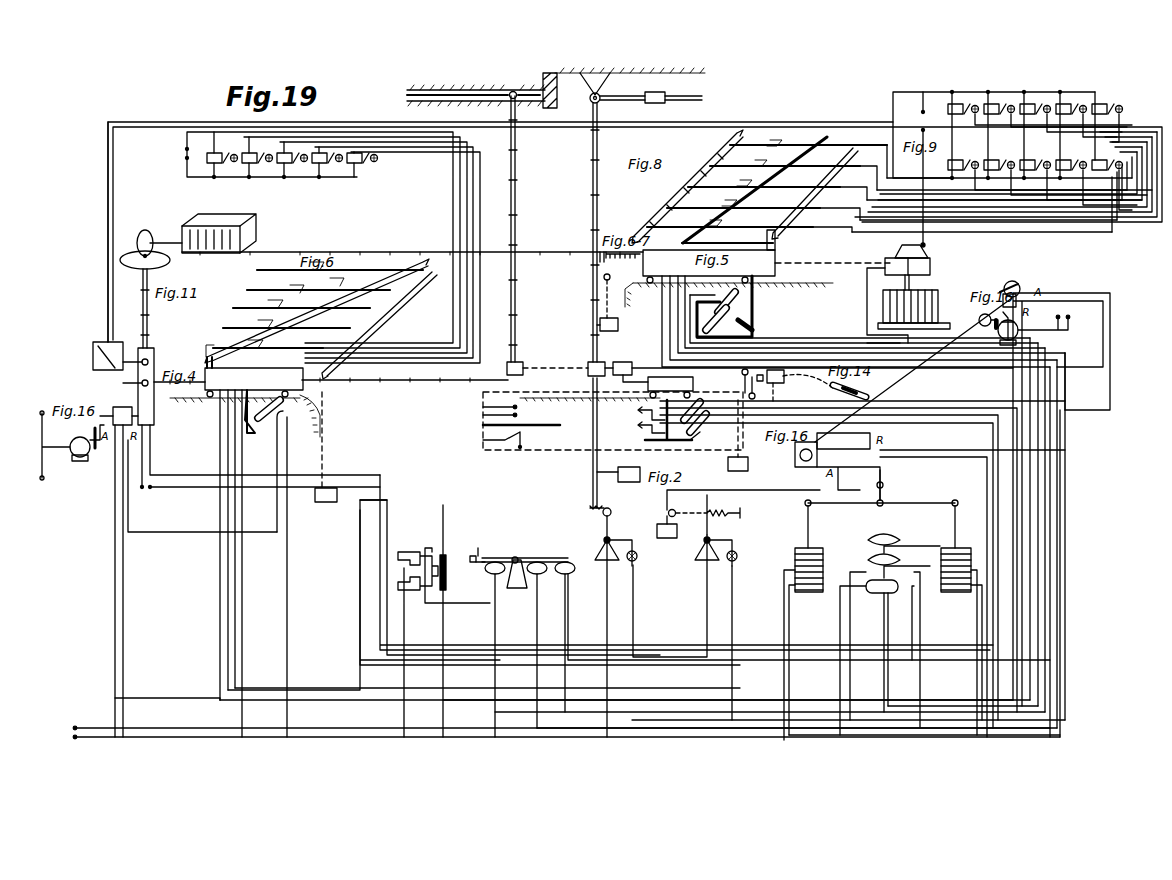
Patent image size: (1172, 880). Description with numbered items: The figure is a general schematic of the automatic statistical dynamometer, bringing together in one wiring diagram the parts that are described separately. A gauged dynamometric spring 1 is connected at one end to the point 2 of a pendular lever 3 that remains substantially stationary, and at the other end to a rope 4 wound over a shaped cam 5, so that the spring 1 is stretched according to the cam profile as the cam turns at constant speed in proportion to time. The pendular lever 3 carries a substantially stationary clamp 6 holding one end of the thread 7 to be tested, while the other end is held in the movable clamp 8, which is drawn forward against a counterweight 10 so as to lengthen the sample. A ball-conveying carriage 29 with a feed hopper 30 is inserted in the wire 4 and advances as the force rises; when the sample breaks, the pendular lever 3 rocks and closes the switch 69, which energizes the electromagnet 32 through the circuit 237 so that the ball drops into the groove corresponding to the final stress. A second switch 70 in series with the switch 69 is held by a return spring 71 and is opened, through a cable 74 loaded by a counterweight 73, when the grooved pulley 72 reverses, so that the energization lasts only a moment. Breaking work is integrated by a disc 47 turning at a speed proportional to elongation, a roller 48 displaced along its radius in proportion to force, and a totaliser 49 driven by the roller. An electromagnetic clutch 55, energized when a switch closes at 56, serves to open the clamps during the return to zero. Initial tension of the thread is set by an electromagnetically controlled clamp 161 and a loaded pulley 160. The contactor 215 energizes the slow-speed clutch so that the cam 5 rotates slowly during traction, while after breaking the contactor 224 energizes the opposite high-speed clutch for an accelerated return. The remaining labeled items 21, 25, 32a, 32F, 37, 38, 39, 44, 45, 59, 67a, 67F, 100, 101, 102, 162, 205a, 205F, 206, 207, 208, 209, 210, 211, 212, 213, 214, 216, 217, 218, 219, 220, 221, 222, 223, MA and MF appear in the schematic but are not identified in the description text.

The dynamometric spring 1 is at (608, 267).
The point of the pendular lever 2 is at (600, 302).
The pendular lever 3 is at (590, 300).
The rope 4 is at (623, 263).
The cam 5 is at (1020, 282).
The clamp 6 is at (596, 361).
The thread to be tested 7 is at (551, 355).
The movable clamp 8 is at (547, 360).
The counterweight 10 is at (326, 456).
The link rod 21 is at (651, 106).
The relay 25 is at (251, 418).
The movable carriage 29 is at (914, 302).
The feed hopper 30 is at (928, 256).
The electromagnet 32 is at (885, 255).
The contact block 32a is at (254, 379).
The contact block 32F is at (709, 263).
The contact 37 is at (474, 567).
The bar 38 is at (668, 427).
The contact bar 39 is at (572, 196).
The switch 44 is at (109, 253).
The contact bar 45 is at (536, 256).
The plate 47 is at (141, 299).
The roller 48 is at (159, 236).
The totaliser 49 is at (227, 233).
The electromagnetic clutch 55 is at (442, 621).
The electric switch 56 is at (729, 319).
The switch 59 is at (517, 440).
The contact 67a is at (247, 385).
The contact 67F is at (697, 273).
The switch 69 is at (616, 622).
The second switch 70 is at (685, 621).
The return spring 71 is at (723, 514).
The grooved pulley 72 is at (736, 503).
The counterweight 73 is at (667, 538).
The cable 74 is at (691, 503).
The rod 100 is at (524, 229).
The bar 101 is at (473, 106).
The support 102 is at (476, 102).
The pulley 160 is at (741, 384).
The clamp 161 is at (800, 386).
The switch box 162 is at (813, 363).
The base 205a is at (235, 393).
The base 205F is at (757, 281).
The coil 206 is at (961, 620).
The coil 207 is at (803, 623).
The contact 208 is at (904, 541).
The contact 209 is at (899, 566).
The contact 210 is at (869, 653).
The contact 211 is at (525, 641).
The contact 212 is at (802, 628).
The solenoid 213 is at (733, 301).
The contact block 214 is at (688, 389).
The contactor 215 is at (538, 427).
The contact 216 is at (513, 410).
The contact 217 is at (639, 412).
The contact 218 is at (639, 425).
The solenoid 219 is at (250, 433).
The wire 220 is at (881, 495).
The relay 221 is at (758, 438).
The pulley 222 is at (1000, 293).
The relay 223 is at (119, 564).
The contactor 224 is at (700, 426).
The circuit 237 is at (870, 303).
The motor MA is at (72, 445).
The motor MF is at (1022, 328).